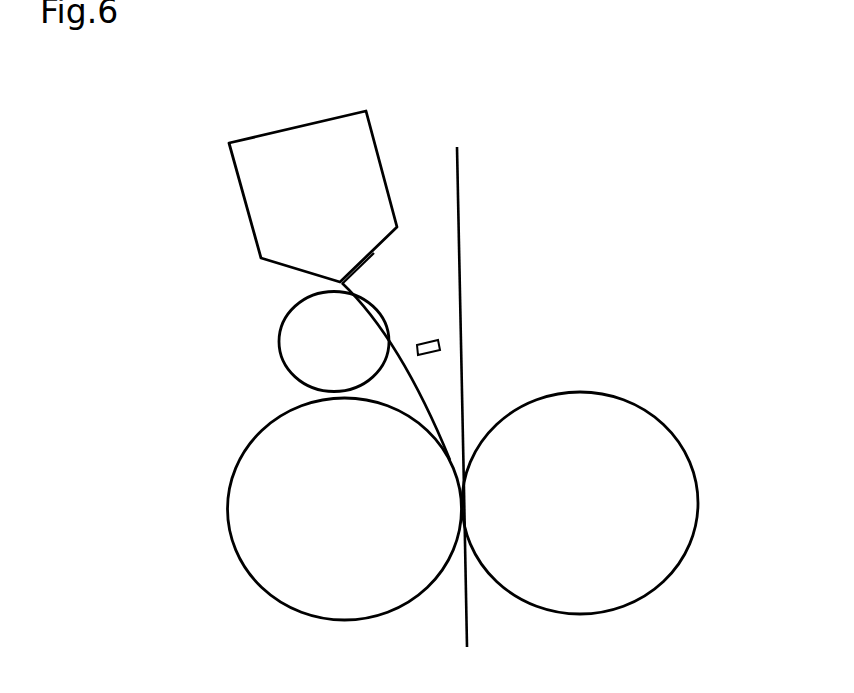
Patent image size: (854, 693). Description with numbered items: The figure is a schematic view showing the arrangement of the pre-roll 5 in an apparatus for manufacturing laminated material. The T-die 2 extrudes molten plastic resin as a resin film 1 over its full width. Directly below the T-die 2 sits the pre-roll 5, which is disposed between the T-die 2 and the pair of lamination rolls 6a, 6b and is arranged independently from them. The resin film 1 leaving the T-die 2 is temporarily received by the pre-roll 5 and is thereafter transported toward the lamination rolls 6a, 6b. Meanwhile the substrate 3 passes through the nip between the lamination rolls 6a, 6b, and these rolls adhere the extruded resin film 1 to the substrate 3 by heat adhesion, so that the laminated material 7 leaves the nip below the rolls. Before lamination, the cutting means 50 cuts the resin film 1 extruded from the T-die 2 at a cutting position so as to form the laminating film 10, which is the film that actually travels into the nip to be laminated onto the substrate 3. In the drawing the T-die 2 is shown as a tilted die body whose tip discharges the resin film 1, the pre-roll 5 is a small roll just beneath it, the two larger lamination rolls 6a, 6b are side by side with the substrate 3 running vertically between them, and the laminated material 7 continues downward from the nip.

The resin film 1 is at (345, 284).
The T-die 2 is at (250, 215).
The substrate 3 is at (459, 267).
The pre-roll 5 is at (282, 375).
The lamination roll 6a is at (231, 554).
The lamination roll 6b is at (693, 550).
The laminated material 7 is at (472, 637).
The laminating film 10 is at (430, 415).
The cutting means 50 is at (440, 345).